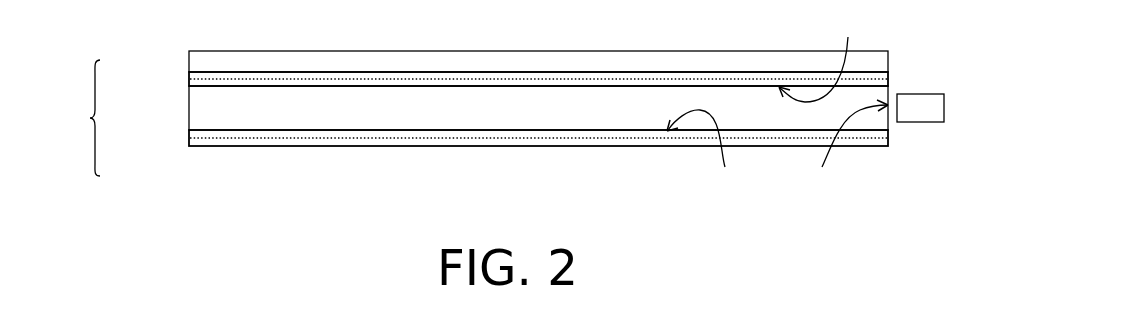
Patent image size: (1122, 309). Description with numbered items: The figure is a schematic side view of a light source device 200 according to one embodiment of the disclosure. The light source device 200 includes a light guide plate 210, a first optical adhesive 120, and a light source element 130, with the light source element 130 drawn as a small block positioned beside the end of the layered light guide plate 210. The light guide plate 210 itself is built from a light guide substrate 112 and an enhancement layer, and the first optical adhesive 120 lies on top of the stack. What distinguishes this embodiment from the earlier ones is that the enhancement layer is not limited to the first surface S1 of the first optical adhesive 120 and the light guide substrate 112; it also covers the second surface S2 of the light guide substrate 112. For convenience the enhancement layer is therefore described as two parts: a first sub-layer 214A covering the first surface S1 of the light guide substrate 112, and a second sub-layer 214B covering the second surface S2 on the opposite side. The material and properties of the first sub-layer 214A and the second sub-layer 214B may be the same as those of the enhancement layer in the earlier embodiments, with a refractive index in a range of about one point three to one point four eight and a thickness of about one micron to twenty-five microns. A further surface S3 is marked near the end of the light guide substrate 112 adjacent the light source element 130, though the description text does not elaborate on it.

The light source device 200 is at (498, 120).
The light guide plate 210 is at (470, 118).
The first optical adhesive 120 is at (203, 59).
The first sub-layer 214A is at (195, 80).
The light guide substrate 112 is at (197, 106).
The second sub-layer 214B is at (195, 137).
The light source element 130 is at (917, 102).
The first surface S1 is at (818, 54).
The second surface S2 is at (702, 155).
The third surface S3 is at (848, 150).